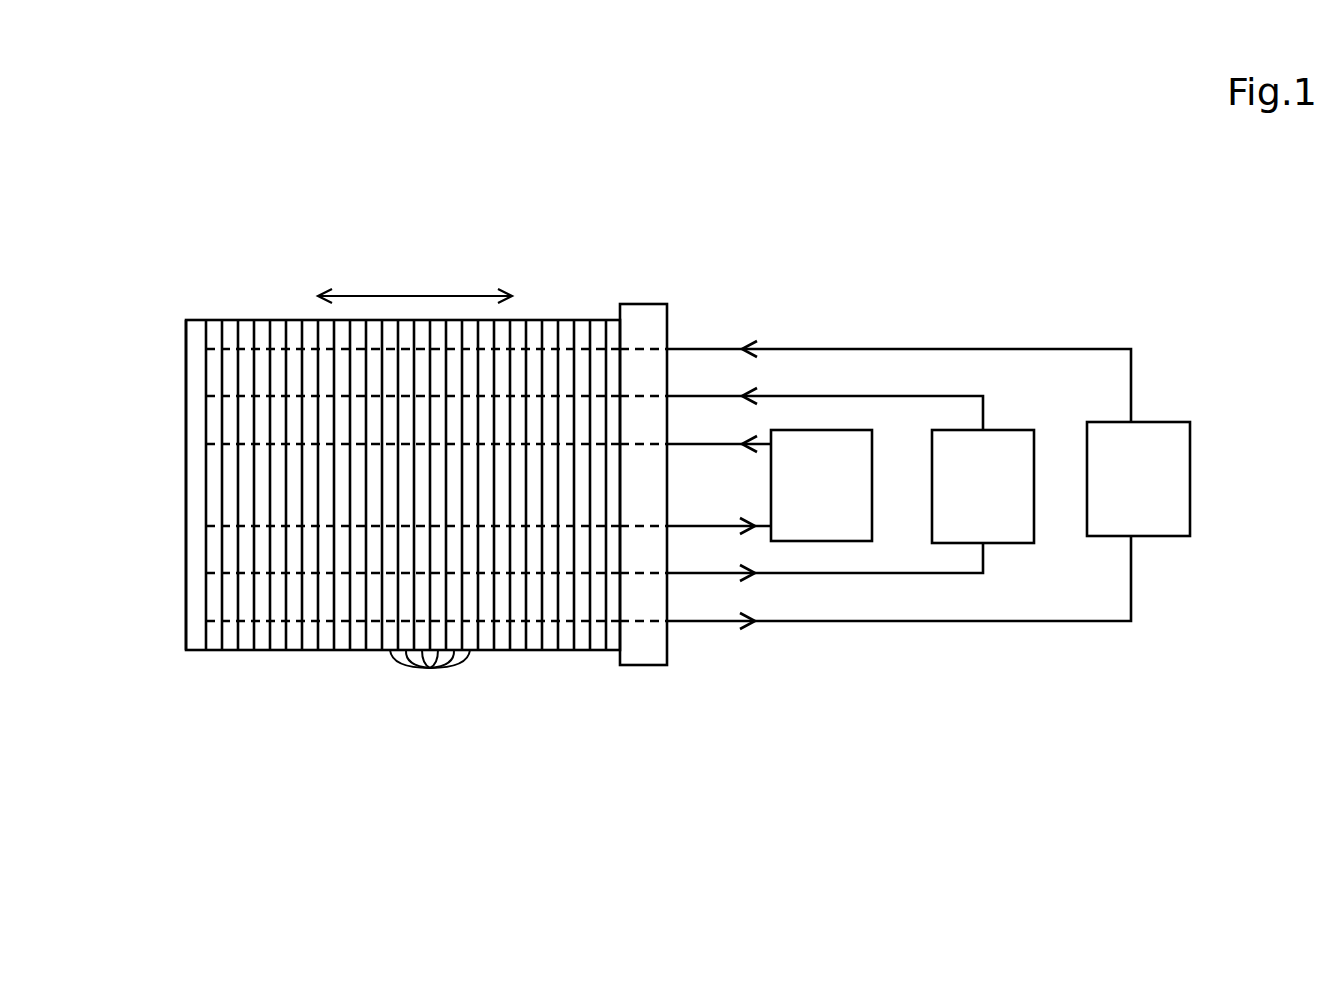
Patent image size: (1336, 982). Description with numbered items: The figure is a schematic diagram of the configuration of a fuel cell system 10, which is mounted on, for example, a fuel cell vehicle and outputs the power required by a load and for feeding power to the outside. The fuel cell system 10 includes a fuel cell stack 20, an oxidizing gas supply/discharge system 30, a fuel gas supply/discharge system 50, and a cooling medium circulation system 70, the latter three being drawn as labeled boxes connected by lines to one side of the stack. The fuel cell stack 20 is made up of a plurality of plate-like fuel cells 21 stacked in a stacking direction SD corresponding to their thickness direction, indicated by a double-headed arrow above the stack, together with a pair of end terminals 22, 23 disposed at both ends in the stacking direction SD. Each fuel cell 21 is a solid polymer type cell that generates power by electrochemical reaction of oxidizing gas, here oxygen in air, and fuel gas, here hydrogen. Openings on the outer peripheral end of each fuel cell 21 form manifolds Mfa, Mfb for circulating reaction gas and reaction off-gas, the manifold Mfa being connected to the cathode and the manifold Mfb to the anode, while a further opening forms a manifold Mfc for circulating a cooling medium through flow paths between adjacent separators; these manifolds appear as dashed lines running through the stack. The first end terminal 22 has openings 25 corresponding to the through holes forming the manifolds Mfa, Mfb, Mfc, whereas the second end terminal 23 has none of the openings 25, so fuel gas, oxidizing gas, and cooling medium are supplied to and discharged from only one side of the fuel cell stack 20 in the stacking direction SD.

The fuel cell system 10 is at (751, 262).
The fuel cell stack 20 is at (239, 312).
The fuel cell 21 is at (430, 677).
The first end terminal 22 is at (642, 667).
The second end terminal 23 is at (193, 651).
The openings 25 is at (648, 349).
The oxidizing gas supply/discharge system 30 is at (1034, 452).
The fuel gas supply/discharge system 50 is at (1190, 452).
The cooling medium circulation system 70 is at (872, 453).
The manifold Mfa is at (279, 397).
The manifold Mfb is at (530, 348).
The manifold Mfc is at (247, 443).
The stacking direction SD is at (415, 282).